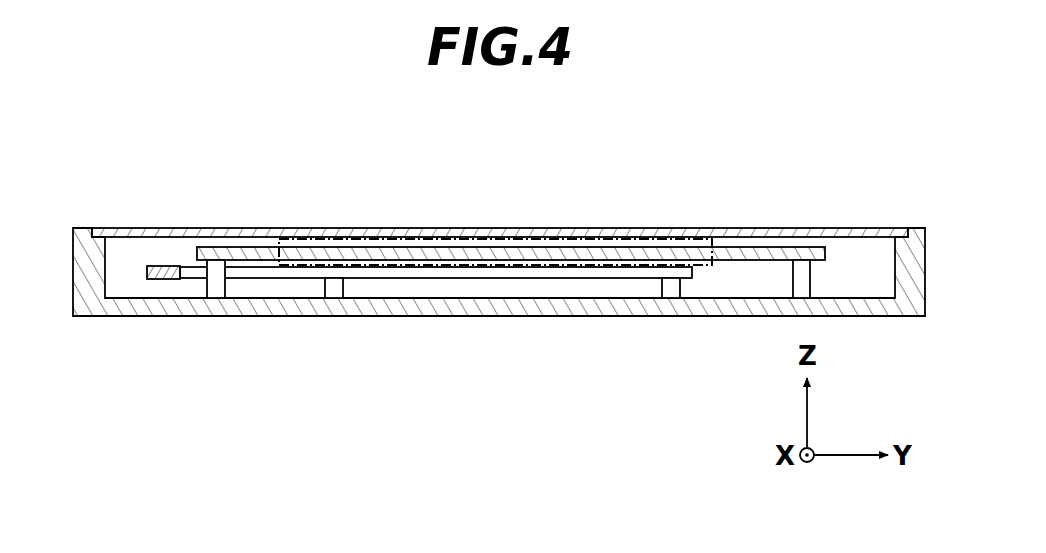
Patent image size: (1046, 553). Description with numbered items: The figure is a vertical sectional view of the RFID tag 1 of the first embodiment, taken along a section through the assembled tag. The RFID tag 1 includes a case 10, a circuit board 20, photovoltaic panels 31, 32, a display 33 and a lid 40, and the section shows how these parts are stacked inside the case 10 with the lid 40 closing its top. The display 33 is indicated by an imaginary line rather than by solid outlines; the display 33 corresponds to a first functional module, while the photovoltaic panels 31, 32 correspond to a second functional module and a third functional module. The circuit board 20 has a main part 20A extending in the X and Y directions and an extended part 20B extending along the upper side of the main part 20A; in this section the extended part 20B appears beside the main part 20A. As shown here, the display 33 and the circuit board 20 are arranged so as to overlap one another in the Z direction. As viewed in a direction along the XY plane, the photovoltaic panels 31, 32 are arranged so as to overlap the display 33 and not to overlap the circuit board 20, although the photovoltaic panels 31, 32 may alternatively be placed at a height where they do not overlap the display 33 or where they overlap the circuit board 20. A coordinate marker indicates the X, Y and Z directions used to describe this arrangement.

The RFID tag 1 is at (499, 257).
The case 10 is at (122, 309).
The circuit board 20 is at (419, 356).
The main part 20A is at (317, 273).
The extended part 20B is at (196, 331).
The photovoltaic panel 31 is at (511, 221).
The photovoltaic panel 32 is at (252, 247).
The display 33 is at (459, 240).
The lid 40 is at (128, 228).